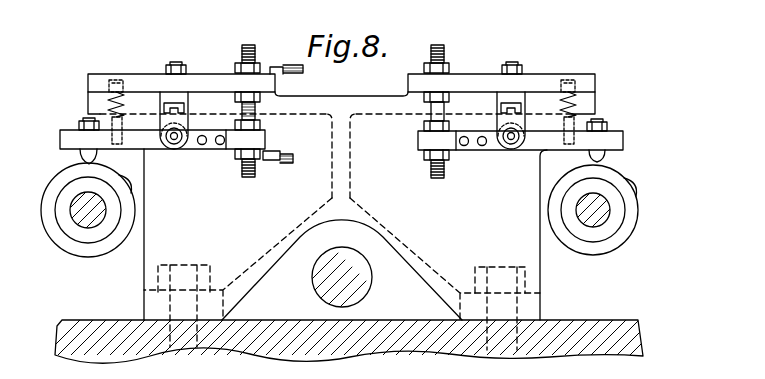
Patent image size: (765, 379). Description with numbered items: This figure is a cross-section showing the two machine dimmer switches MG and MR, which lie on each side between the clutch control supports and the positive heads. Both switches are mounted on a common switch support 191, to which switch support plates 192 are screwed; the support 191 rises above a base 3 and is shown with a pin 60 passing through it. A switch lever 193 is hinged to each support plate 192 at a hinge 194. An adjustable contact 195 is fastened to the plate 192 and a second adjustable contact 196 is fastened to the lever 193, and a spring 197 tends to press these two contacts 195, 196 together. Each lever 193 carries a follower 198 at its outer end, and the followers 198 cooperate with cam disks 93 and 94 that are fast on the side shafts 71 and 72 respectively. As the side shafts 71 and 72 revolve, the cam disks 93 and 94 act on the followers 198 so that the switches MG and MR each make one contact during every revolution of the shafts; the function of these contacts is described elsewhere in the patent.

The base 3 is at (640, 331).
The pin 60 is at (362, 287).
The side shaft 71 is at (85, 215).
The side shaft 72 is at (597, 218).
The cam disk 93 is at (48, 207).
The cam disk 94 is at (638, 208).
The switch support 191 is at (320, 123).
The switch support plate 192 is at (130, 80).
The switch lever 193 is at (144, 140).
The hinge 194 is at (180, 141).
The adjustable contact 195 is at (252, 103).
The adjustable contact 196 is at (251, 116).
The spring 197 is at (112, 97).
The follower 198 is at (76, 153).
The machine dimmer switch MG is at (103, 70).
The machine dimmer switch MR is at (560, 66).